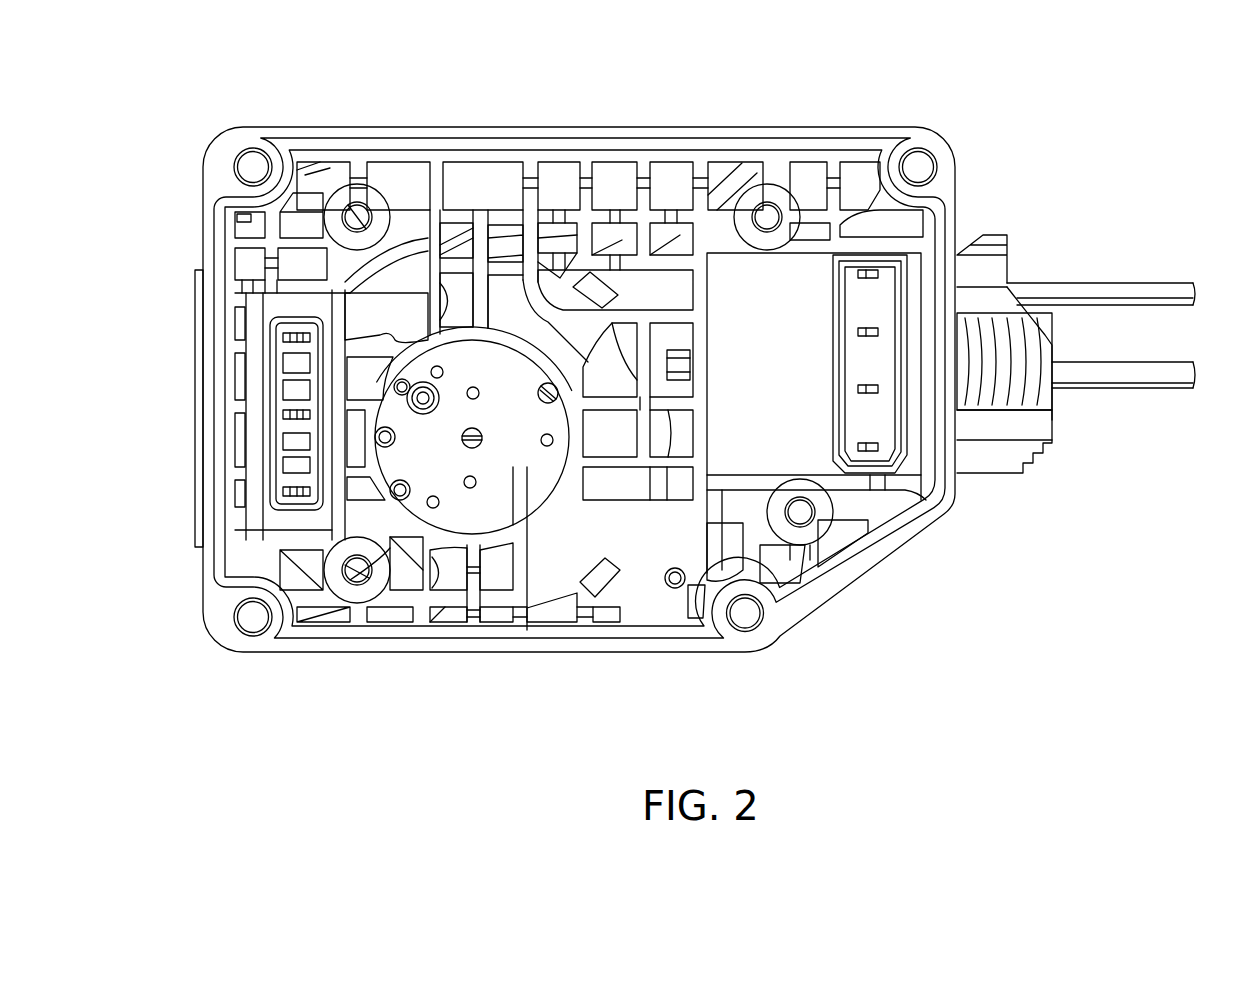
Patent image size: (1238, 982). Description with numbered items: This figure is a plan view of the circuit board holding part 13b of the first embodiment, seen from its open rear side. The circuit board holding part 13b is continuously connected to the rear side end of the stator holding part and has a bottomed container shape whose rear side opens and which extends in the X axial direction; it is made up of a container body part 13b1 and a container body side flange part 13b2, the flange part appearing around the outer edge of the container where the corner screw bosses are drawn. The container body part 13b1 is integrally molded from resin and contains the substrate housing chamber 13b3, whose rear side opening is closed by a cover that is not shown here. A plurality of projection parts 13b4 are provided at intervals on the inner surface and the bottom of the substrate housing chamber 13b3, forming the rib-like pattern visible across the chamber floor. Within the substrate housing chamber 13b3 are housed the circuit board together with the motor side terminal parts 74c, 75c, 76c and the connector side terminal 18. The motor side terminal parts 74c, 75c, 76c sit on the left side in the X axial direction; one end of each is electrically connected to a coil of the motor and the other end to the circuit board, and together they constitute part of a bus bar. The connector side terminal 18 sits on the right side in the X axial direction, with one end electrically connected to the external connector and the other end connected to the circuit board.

The circuit board holding part 13b is at (860, 128).
The container body part 13b1 is at (567, 127).
The container body side flange part 13b2 is at (215, 140).
The substrate housing chamber 13b3 is at (650, 290).
The projection parts 13b4 is at (480, 233).
The connector side terminal 18 is at (878, 393).
The motor side terminal part 74c is at (290, 414).
The motor side terminal part 75c is at (290, 338).
The motor side terminal part 76c is at (290, 492).